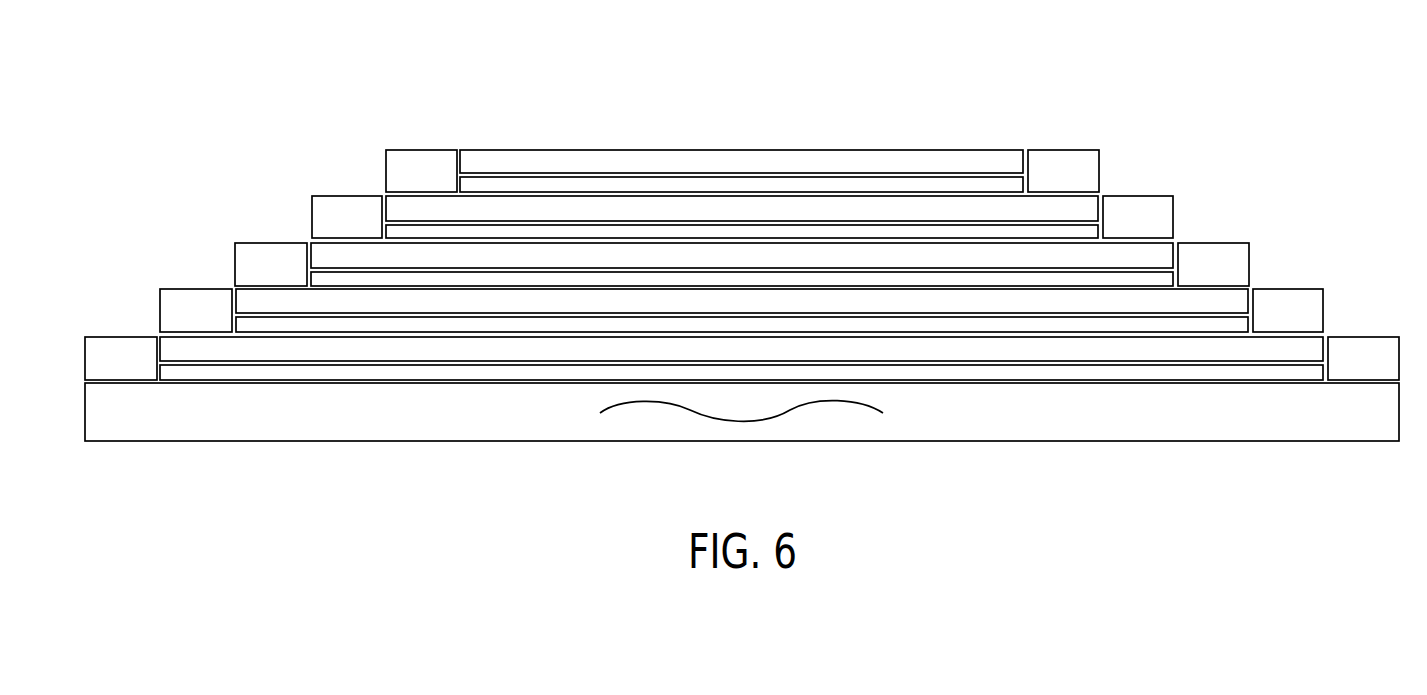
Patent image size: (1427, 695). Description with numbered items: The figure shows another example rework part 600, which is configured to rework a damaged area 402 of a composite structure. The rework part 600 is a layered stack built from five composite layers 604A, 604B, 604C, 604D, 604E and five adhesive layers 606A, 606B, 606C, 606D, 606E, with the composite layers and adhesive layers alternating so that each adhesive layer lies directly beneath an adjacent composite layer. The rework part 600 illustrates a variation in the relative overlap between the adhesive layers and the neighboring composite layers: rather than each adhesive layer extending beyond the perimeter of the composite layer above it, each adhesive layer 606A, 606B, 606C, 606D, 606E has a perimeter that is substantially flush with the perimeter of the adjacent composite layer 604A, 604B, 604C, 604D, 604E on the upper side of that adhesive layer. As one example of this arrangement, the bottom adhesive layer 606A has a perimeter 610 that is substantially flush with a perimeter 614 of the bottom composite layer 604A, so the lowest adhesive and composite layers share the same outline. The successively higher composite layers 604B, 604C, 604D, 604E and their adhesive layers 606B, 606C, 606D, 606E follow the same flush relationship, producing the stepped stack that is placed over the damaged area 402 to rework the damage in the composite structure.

The rework part 600 is at (736, 85).
The perimeter of bottom adhesive layer 610 is at (177, 376).
The perimeter of bottom composite layer 614 is at (165, 345).
The bottom composite layer 604A is at (282, 350).
The composite layer 604B is at (343, 303).
The composite layer 604C is at (423, 252).
The composite layer 604D is at (497, 210).
The composite layer 604E is at (582, 163).
The bottom adhesive layer 606A is at (1219, 373).
The adhesive layer 606B is at (1148, 325).
The adhesive layer 606C is at (1092, 277).
The adhesive layer 606D is at (1005, 229).
The adhesive layer 606E is at (933, 183).
The damaged area 402 is at (700, 421).